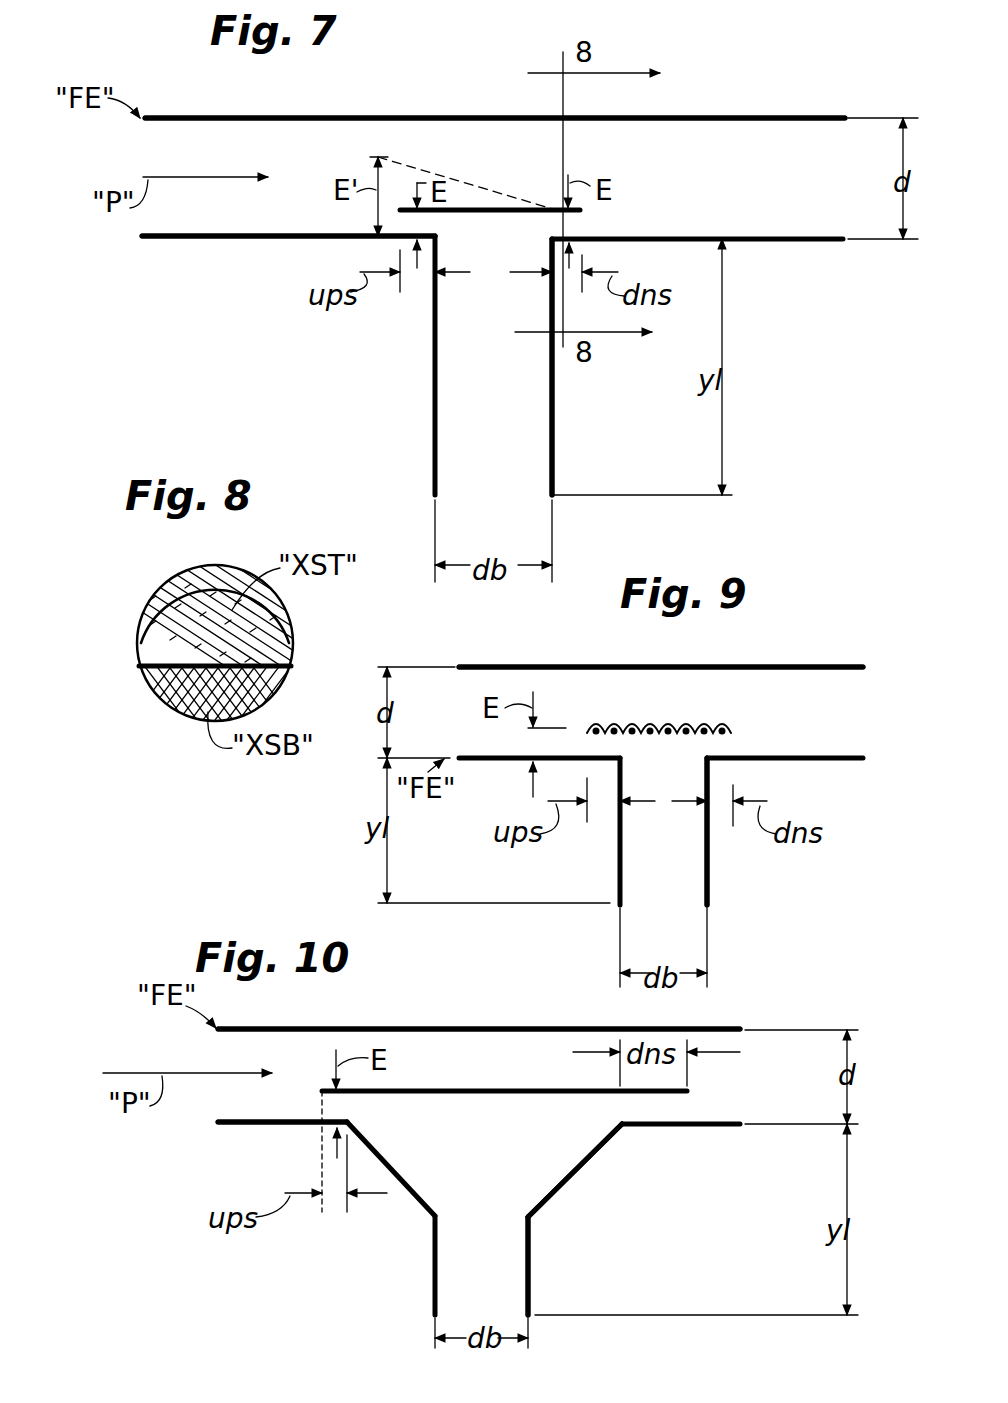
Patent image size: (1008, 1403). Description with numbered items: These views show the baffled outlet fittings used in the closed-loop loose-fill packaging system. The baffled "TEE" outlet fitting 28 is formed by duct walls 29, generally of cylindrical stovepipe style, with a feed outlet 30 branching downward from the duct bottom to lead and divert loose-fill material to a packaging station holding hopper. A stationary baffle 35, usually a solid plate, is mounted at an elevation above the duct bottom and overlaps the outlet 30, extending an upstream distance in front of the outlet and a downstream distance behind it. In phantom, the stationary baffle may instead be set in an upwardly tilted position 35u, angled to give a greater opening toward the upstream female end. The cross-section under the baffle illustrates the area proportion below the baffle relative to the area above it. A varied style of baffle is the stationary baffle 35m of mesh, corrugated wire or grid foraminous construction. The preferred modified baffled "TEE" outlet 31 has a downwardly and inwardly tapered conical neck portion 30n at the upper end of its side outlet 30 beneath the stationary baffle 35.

In FIG. 7, the baffled "TEE" outlet fitting 28 is at (393, 96).
In FIG. 8, the baffled "TEE" outlet fitting 28 is at (146, 727).
In FIG. 9, the baffled "TEE" outlet fitting 28 is at (772, 660).
In FIG. 7, the duct walls 29 is at (302, 116).
In FIG. 8, the duct walls 29 is at (152, 600).
In FIG. 9, the duct walls 29 is at (553, 665).
In FIG. 10, the duct walls 29 is at (353, 1027).
In FIG. 7, the feed outlet 30 is at (555, 426).
In FIG. 9, the feed outlet 30 is at (710, 862).
In FIG. 10, the feed outlet 30 is at (532, 1254).
In FIG. 10, the tapered conical neck portion 30n is at (585, 1168).
In FIG. 10, the modified baffled "TEE" outlet 31 is at (460, 1006).
In FIG. 7, the stationary baffle 35 is at (534, 214).
In FIG. 8, the stationary baffle 35 is at (290, 650).
In FIG. 10, the stationary baffle 35 is at (536, 1096).
In FIG. 7, the upwardly tilted stationary baffle 35u is at (442, 172).
In FIG. 9, the mesh stationary baffle 35m is at (722, 722).